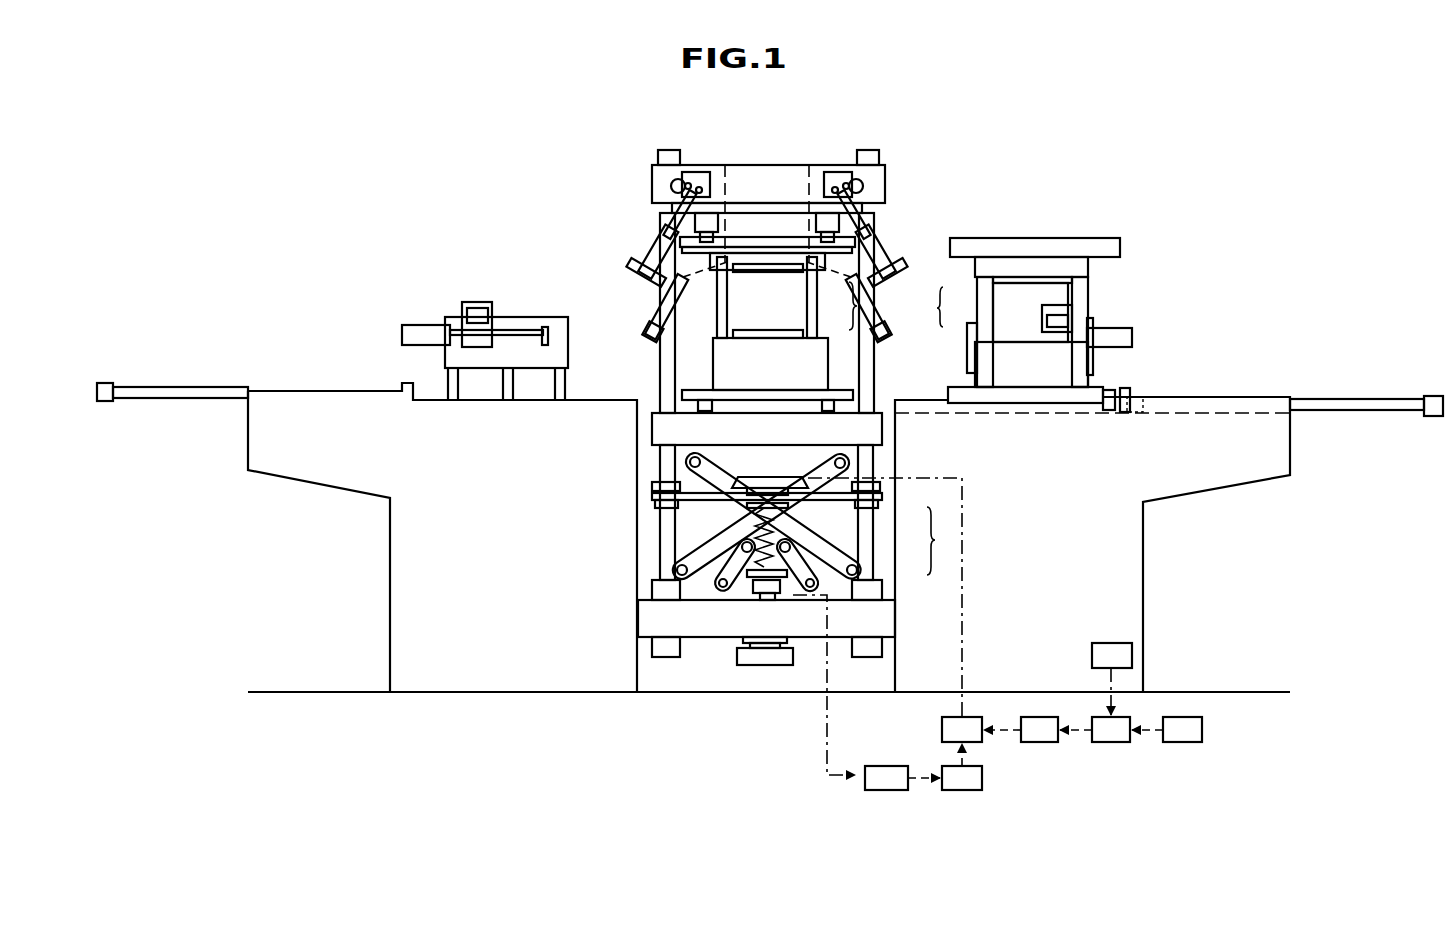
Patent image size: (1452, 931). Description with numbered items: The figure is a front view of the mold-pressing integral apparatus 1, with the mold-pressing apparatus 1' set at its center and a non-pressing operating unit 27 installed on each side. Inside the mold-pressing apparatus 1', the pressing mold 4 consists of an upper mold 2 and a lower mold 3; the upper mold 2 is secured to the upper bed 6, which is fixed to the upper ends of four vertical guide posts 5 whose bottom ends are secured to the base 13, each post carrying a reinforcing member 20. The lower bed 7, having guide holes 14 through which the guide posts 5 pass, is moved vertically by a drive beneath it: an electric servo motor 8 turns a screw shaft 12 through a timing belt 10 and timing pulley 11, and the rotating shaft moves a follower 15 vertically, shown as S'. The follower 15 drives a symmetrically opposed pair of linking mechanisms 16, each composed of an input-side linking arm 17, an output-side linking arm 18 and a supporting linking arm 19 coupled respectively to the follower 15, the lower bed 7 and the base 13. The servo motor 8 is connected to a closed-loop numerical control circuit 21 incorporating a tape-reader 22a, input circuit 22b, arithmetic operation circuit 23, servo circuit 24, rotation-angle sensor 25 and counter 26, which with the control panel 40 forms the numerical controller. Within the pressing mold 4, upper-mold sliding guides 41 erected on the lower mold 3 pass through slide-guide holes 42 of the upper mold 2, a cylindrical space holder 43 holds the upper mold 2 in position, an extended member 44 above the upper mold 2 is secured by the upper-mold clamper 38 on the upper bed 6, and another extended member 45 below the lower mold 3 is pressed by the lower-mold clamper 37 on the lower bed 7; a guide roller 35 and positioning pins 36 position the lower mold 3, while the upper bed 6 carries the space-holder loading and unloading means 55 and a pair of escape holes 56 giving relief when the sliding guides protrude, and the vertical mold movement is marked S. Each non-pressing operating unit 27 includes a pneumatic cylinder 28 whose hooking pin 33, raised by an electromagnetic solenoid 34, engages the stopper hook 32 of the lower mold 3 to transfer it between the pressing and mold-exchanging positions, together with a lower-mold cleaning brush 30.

The mold-pressing integral apparatus 1 is at (1016, 111).
The mold-pressing apparatus 1' is at (772, 118).
The upper mold 2 is at (815, 304).
The lower mold 3 is at (815, 328).
The pressing mold 4 is at (891, 322).
The guide post 5 is at (661, 356).
The upper bed 6 is at (880, 170).
The lower bed 7 is at (876, 413).
The electric servo motor 8 is at (769, 480).
The timing belt 10 is at (793, 657).
The timing pulley 11 is at (782, 666).
The screw shaft 12 is at (727, 525).
The base 13 is at (700, 634).
The guide hole 14 is at (660, 455).
The follower 15 is at (742, 585).
The linking mechanism 16 is at (707, 537).
The input-side linking arm 17 is at (797, 565).
The output-side linking arm 18 is at (813, 514).
The supporting linking arm 19 is at (813, 550).
The reinforcing member 20 is at (655, 496).
The numerical control circuit 21 is at (1063, 781).
The tape-reader 22a is at (1185, 742).
The input circuit 22b is at (1112, 742).
The arithmetic operation circuit 23 is at (1040, 742).
The servo circuit 24 is at (942, 727).
The rotation-angle sensor 25 is at (887, 790).
The counter 26 is at (962, 790).
The non-pressing operating unit 27 is at (347, 275).
The pneumatic cylinder 28 is at (222, 391).
The lower-mold cleaning brush 30 is at (440, 310).
The stopper hook 32 is at (1150, 406).
The hooking pin 33 is at (1109, 396).
The electromagnetic solenoid 34 is at (1128, 390).
The guide roller 35 is at (730, 412).
The positioning pin 36 is at (832, 400).
The lower-mold clamper 37 is at (705, 400).
The upper-mold clamper 38 is at (690, 198).
The control panel 40 is at (1110, 643).
The upper-mold sliding guide 41 is at (718, 331).
The slide-guide hole 42 is at (660, 283).
The cylindrical space holder 43 is at (658, 314).
The extended member 44 is at (712, 272).
The extended member 45 is at (780, 396).
The space-holder loading and unloading means 55 is at (632, 260).
The escape hole 56 is at (727, 170).
The stroke S is at (759, 307).
The vertical movement S' is at (787, 607).